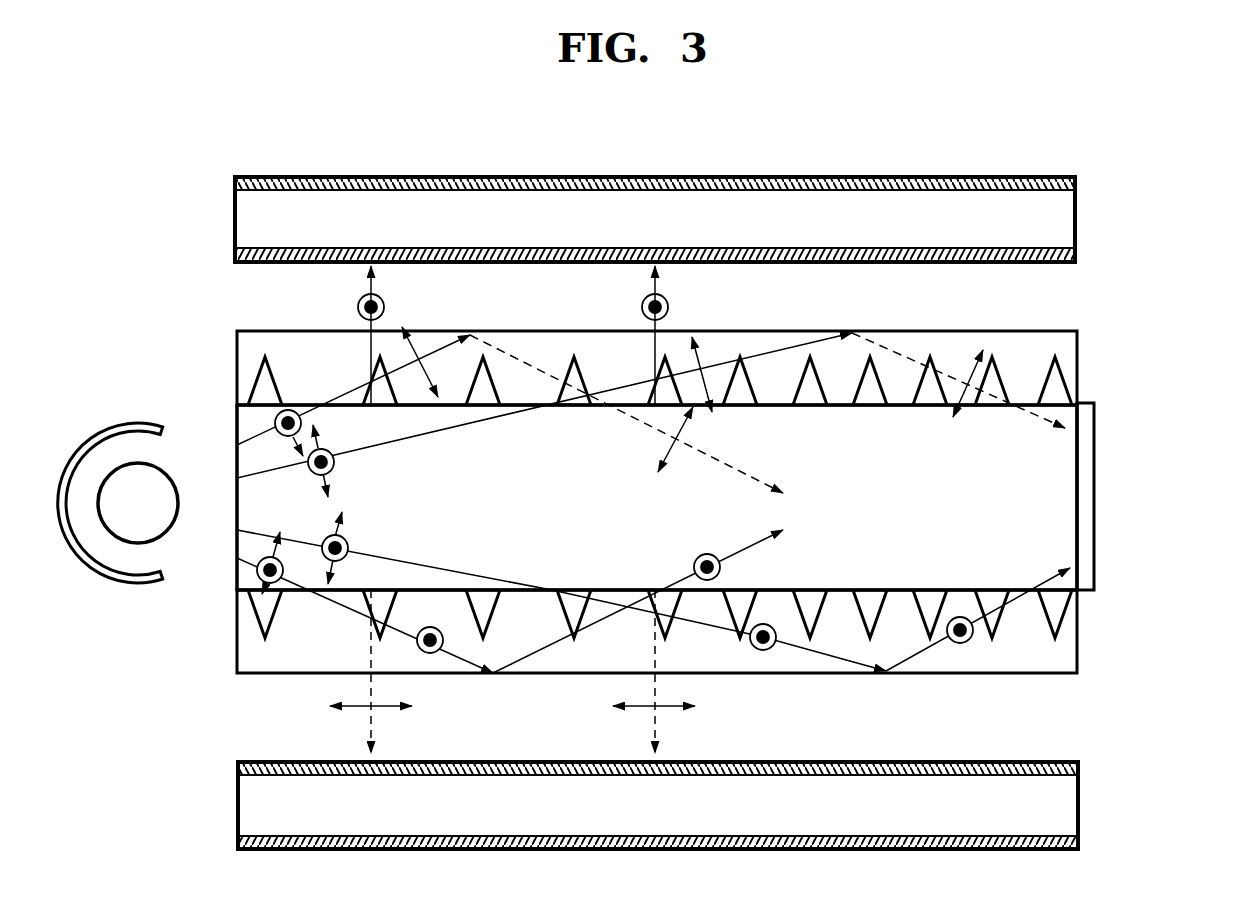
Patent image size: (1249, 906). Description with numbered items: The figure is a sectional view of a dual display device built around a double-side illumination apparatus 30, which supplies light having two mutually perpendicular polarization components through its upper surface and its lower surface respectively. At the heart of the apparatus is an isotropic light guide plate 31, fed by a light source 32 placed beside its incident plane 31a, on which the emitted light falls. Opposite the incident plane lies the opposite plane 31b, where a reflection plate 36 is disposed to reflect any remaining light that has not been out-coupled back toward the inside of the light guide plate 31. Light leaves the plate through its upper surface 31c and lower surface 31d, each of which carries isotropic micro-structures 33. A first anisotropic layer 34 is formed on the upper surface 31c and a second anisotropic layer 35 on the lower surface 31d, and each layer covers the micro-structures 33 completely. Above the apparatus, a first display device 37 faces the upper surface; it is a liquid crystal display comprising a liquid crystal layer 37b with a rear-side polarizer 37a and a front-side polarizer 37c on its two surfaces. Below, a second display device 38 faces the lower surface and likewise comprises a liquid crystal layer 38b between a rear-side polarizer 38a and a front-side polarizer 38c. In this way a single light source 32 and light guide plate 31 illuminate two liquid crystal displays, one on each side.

The double-side illumination apparatus 30 is at (729, 509).
The isotropic light guide plate 31 is at (713, 497).
The incident plane 31a is at (238, 506).
The opposite plane 31b is at (1075, 478).
The upper surface 31c is at (842, 406).
The lower surface 31d is at (895, 589).
The light source 32 is at (122, 518).
The isotropic micro-structures 33 is at (1060, 390).
The first anisotropic layer 34 is at (1060, 345).
The second anisotropic layer 35 is at (1022, 660).
The reflection plate 36 is at (1085, 557).
The first display device 37 is at (741, 213).
The rear-side polarizer 37a is at (710, 263).
The liquid crystal layer 37b is at (1065, 218).
The front-side polarizer 37c is at (1076, 183).
The second display device 38 is at (732, 805).
The rear-side polarizer 38a is at (1079, 765).
The liquid crystal layer 38b is at (1068, 806).
The front-side polarizer 38c is at (702, 850).